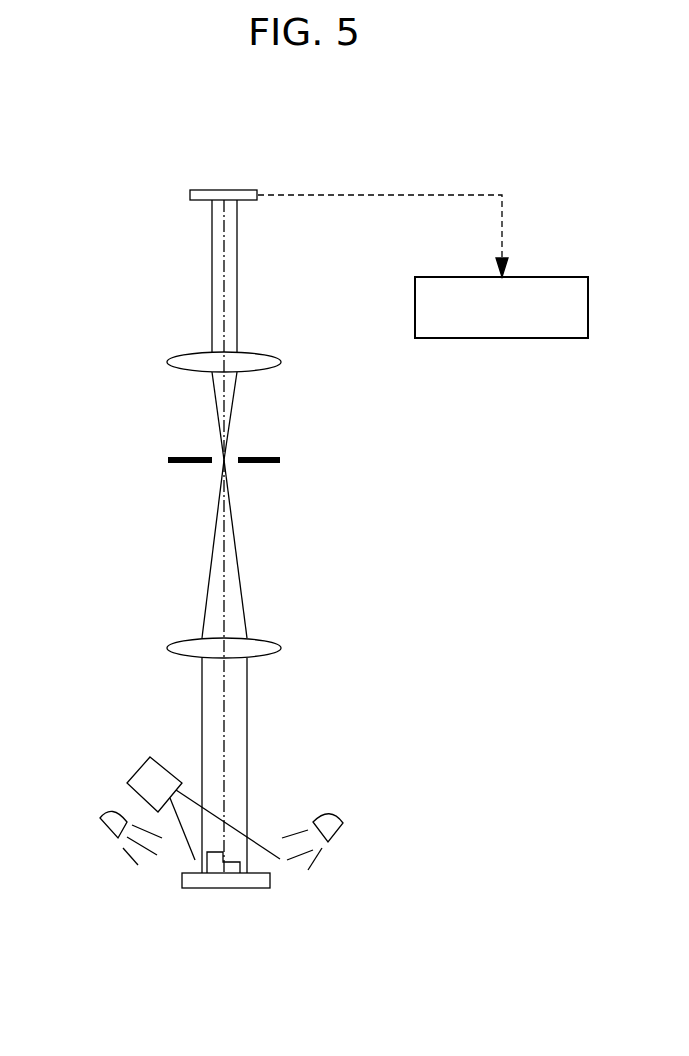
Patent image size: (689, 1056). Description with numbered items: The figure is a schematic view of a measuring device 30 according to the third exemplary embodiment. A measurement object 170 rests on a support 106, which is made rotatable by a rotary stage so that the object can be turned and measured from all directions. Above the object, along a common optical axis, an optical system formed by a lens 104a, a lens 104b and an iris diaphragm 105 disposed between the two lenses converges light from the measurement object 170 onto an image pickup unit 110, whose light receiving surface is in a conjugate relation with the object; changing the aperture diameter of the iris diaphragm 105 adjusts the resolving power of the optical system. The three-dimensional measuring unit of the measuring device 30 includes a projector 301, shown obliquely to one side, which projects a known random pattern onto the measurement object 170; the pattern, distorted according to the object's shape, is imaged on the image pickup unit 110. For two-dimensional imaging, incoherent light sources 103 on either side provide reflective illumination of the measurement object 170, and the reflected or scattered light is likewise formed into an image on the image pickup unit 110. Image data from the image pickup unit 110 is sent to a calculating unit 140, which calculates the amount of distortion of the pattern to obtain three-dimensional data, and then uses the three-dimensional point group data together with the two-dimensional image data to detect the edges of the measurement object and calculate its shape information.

The measuring device 30 is at (356, 96).
The image pickup unit 110 is at (222, 192).
The lens 104b is at (180, 370).
The iris diaphragm 105 is at (177, 468).
The lens 104a is at (180, 640).
The projector 301 is at (145, 775).
The incoherent light sources 103 is at (102, 822).
The measurement object 170 is at (198, 867).
The support 106 is at (270, 878).
The calculating unit 140 is at (503, 340).